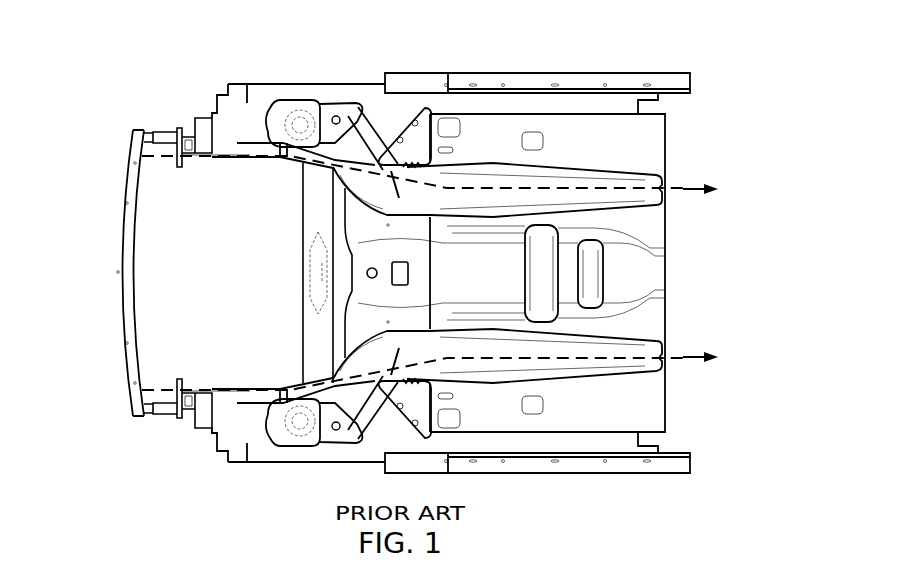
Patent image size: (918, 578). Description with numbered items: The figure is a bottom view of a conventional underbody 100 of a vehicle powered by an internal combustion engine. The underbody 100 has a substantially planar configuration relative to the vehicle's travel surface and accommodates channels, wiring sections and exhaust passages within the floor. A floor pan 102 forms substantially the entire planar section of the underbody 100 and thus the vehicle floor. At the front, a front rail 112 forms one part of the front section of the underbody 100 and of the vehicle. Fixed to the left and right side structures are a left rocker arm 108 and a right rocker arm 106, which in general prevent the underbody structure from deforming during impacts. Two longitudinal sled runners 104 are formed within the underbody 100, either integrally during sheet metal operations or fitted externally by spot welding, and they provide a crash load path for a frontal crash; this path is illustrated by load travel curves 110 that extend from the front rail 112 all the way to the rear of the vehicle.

The underbody 100 is at (150, 58).
The floor pan 102 is at (663, 377).
The sled runner 104 is at (640, 175).
The right rocker arm 106 is at (662, 73).
The left rocker arm 108 is at (675, 475).
The load travel curve 110 is at (142, 156).
The front rail 112 is at (237, 163).